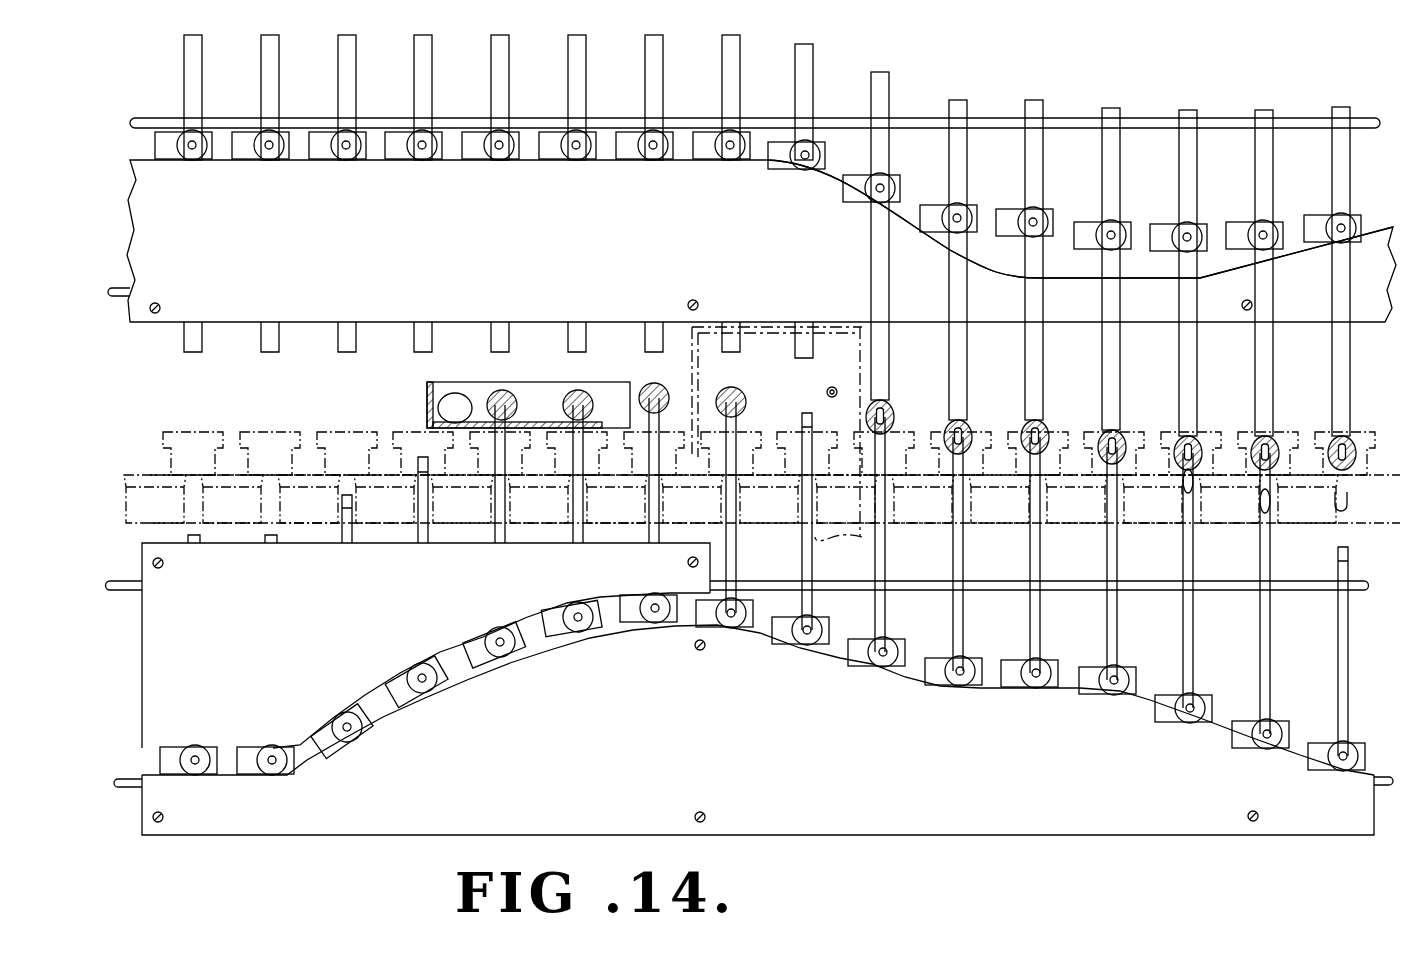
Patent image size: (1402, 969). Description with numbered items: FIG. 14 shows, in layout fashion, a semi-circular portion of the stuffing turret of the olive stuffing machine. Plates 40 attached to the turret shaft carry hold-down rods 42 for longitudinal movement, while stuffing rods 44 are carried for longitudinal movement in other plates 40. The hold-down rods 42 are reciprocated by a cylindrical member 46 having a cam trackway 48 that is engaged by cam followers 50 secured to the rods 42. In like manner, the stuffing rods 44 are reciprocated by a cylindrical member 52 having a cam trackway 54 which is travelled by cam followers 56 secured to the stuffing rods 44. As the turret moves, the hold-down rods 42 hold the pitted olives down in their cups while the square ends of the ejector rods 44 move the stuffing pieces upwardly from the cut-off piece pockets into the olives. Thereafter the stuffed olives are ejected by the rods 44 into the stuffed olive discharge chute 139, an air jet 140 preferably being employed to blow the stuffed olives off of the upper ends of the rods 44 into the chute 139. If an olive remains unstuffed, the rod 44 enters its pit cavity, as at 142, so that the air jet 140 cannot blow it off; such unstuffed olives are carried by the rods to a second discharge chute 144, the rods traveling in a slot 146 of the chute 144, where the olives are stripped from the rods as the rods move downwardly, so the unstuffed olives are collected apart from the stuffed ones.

The plates 40 is at (1295, 118).
The hold-down rods 42 is at (812, 73).
The stuffing rods 44 is at (1266, 650).
The cylindrical member 46 is at (320, 322).
The cam trackway 48 is at (1062, 275).
The cam followers 50 is at (1043, 210).
The cylindrical member 52 is at (329, 685).
The cam trackway 54 is at (387, 713).
The cam followers 56 is at (511, 651).
The stuffed olive discharge chute 139 is at (863, 357).
The air jet 140 is at (832, 387).
The unstuffed olive on rod 142 is at (748, 380).
The second discharge chute 144 is at (522, 385).
The slot 146 is at (532, 432).